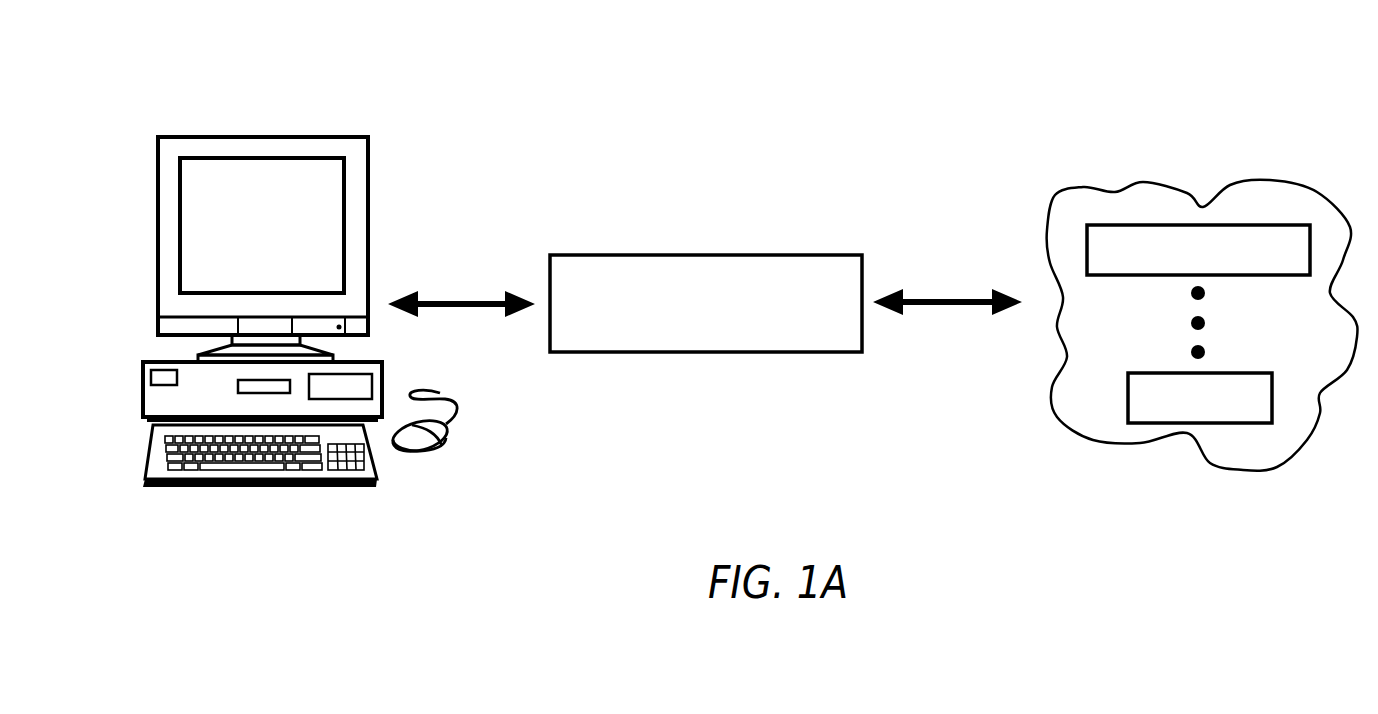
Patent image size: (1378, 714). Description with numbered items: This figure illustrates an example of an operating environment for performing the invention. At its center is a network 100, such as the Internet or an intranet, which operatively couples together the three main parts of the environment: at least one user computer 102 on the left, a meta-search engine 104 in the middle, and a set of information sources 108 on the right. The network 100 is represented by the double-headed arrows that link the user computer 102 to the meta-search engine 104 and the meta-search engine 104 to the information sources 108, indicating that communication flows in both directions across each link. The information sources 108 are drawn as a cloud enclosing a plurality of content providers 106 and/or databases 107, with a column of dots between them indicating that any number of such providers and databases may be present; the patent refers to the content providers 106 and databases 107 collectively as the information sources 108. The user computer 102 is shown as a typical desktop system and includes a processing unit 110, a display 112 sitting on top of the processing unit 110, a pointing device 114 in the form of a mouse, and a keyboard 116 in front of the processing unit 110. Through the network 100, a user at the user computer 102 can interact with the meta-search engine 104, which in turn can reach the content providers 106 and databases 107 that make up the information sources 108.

The network 100 is at (452, 300).
The user computer 102 is at (310, 96).
The meta-search engine 104 is at (722, 254).
The content providers 106 is at (1250, 276).
The databases 107 is at (1162, 372).
The information sources 108 is at (1277, 182).
The processing unit 110 is at (158, 406).
The display 112 is at (357, 146).
The pointing device 114 is at (444, 396).
The keyboard 116 is at (158, 446).